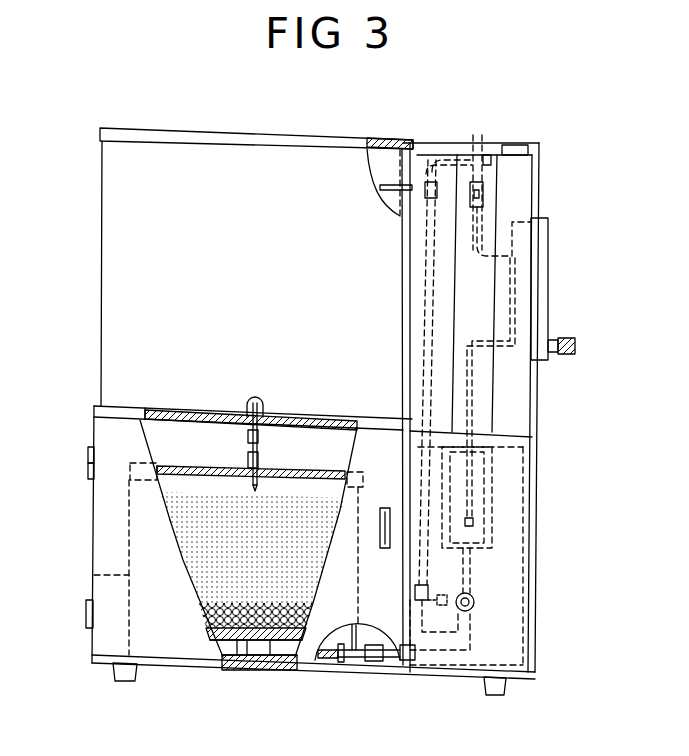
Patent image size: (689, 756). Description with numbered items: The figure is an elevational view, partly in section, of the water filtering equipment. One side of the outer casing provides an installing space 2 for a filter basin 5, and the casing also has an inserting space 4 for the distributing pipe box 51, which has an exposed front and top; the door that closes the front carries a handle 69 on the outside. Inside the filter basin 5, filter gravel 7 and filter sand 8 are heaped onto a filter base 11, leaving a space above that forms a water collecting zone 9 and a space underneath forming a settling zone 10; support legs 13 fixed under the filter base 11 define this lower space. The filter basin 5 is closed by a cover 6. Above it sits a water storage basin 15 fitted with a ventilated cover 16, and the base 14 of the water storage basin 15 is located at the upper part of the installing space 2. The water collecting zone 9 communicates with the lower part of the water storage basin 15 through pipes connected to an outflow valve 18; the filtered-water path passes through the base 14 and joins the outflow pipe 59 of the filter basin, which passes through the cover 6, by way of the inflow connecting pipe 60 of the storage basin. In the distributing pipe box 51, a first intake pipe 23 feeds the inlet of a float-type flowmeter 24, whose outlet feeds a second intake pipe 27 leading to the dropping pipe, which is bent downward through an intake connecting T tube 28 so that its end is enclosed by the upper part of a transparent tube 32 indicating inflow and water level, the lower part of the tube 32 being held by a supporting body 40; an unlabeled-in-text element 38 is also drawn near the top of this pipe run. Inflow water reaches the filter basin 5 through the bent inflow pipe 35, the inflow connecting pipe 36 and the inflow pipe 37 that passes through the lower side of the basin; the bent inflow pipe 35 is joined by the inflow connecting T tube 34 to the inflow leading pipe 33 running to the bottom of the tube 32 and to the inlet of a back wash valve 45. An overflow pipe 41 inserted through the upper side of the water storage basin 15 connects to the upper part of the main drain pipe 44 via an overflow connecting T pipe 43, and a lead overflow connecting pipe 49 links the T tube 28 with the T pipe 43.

The installing space 2 is at (324, 440).
The inserting space 4 is at (510, 649).
The filter basin 5 is at (129, 578).
The cover 6 is at (307, 471).
The filter gravel 7 is at (206, 613).
The filter sand 8 is at (181, 552).
The water collecting zone 9 is at (192, 480).
The settling zone 10 is at (224, 660).
The filter base 11 is at (270, 666).
The support legs 13 is at (237, 642).
The base 14 is at (188, 416).
The water storage basin 15 is at (101, 254).
The cover 16 is at (200, 133).
The outflow valve 18 is at (264, 403).
The first intake pipe 23 is at (481, 341).
The float-type flowmeter 24 is at (549, 279).
The second intake pipe 27 is at (477, 237).
The intake connecting T tube 28 is at (483, 188).
The transparent tube 32 is at (495, 204).
The inflow leading pipe 33 is at (472, 571).
The inflow connecting T tube 34 is at (474, 596).
The bent inflow pipe 35 is at (443, 656).
The inflow connecting pipe 36 is at (375, 662).
The inflow pipe 37 is at (350, 663).
The supply pipe 38 is at (477, 152).
The supporting body 40 is at (495, 484).
The overflow pipe 41 is at (397, 184).
The overflow connecting T pipe 43 is at (435, 190).
The main drain pipe 44 is at (432, 276).
The back wash valve 45 is at (475, 604).
The lead overflow connecting pipe 49 is at (485, 163).
The distributing pipe box 51 is at (542, 143).
The outflow pipe 59 is at (258, 485).
The inflow connecting pipe 60 is at (249, 446).
The handle 69 is at (385, 549).